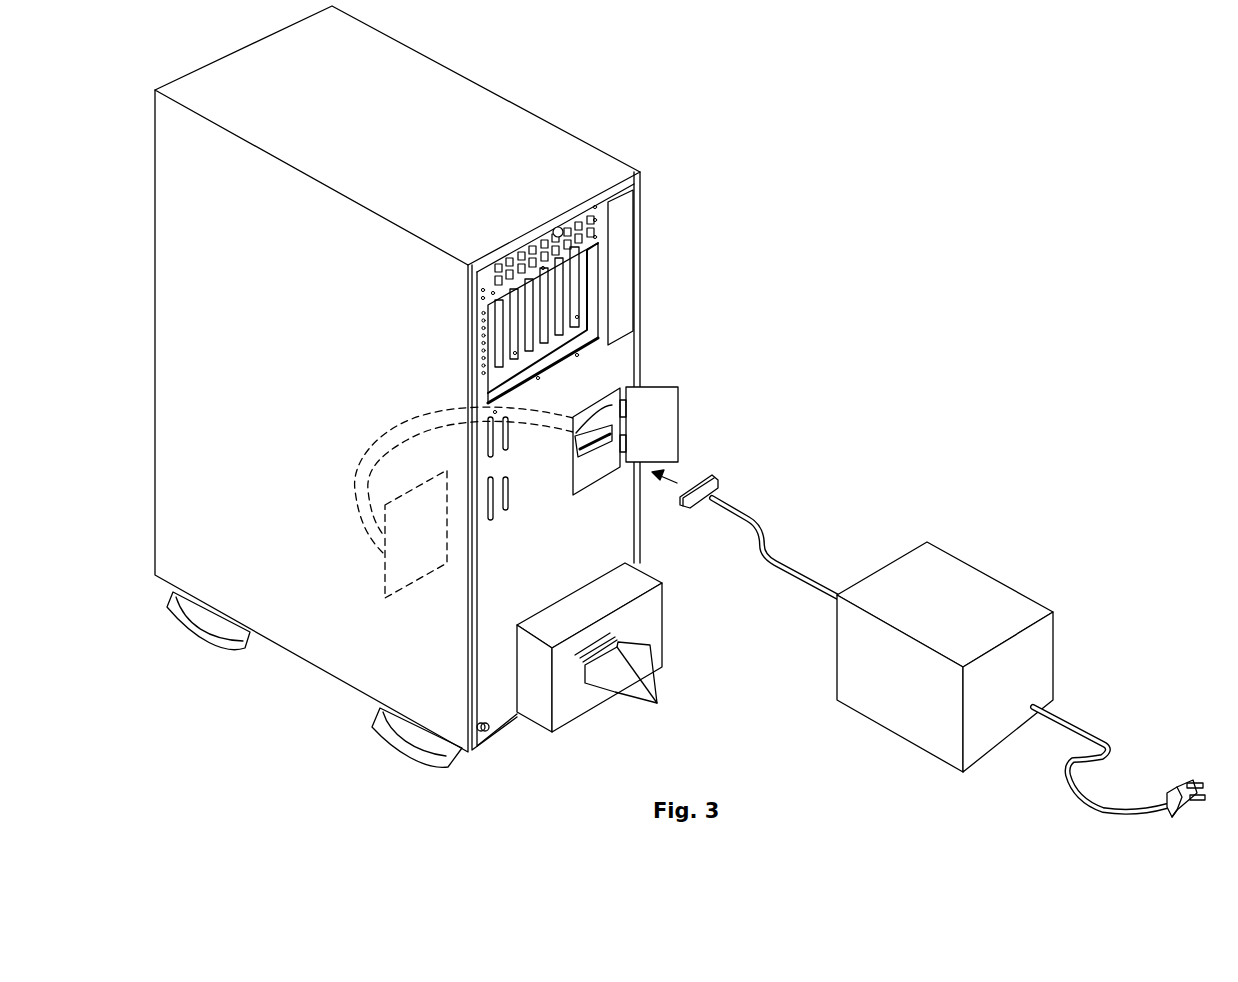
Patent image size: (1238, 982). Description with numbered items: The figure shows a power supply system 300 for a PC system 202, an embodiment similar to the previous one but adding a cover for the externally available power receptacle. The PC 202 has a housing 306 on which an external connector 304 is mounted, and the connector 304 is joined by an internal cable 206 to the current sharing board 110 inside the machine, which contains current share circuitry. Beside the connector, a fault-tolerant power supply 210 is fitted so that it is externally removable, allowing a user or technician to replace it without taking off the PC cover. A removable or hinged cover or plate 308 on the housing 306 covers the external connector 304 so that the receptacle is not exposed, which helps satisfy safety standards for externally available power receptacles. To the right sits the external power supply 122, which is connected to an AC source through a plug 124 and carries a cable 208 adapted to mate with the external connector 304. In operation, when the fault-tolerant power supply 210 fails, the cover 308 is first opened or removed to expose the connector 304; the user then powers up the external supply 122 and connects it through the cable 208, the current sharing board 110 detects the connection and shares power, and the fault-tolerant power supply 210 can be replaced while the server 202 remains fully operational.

The PC system 202 is at (380, 148).
The power supply system 300 is at (792, 288).
The external connector 304 is at (612, 425).
The housing 306 is at (587, 470).
The cover or plate 308 is at (655, 387).
The internal cable 206 is at (395, 432).
The current sharing board 110 is at (410, 583).
The fault-tolerant power supply 210 is at (663, 630).
The cable 208 is at (747, 513).
The external power supply 122 is at (913, 694).
The plug 124 is at (1087, 730).